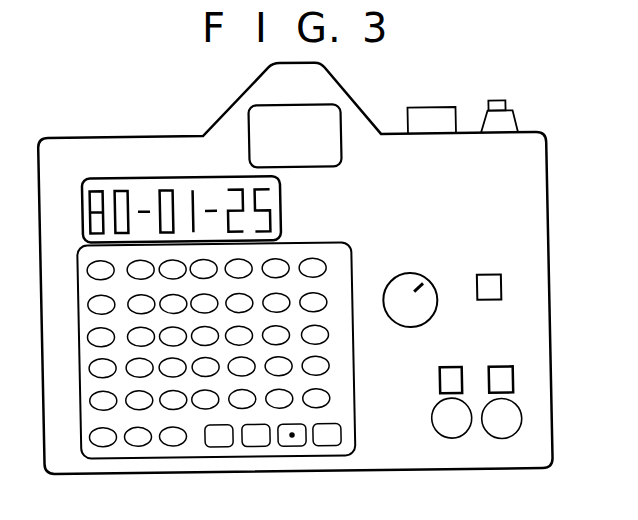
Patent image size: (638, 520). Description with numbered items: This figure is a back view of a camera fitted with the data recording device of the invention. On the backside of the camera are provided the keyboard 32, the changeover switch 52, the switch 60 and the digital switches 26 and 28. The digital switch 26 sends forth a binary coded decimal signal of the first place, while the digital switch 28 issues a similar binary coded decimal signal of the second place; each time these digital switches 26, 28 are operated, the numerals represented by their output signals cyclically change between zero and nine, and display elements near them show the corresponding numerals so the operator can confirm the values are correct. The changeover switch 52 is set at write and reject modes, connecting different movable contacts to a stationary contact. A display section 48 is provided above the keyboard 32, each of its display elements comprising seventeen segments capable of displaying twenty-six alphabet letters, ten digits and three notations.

The display section 48 is at (203, 189).
The keyboard 32 is at (303, 247).
The changeover switch 52 is at (402, 278).
The switch 60 is at (484, 280).
The digital switch 28 is at (431, 429).
The digital switch 26 is at (503, 434).